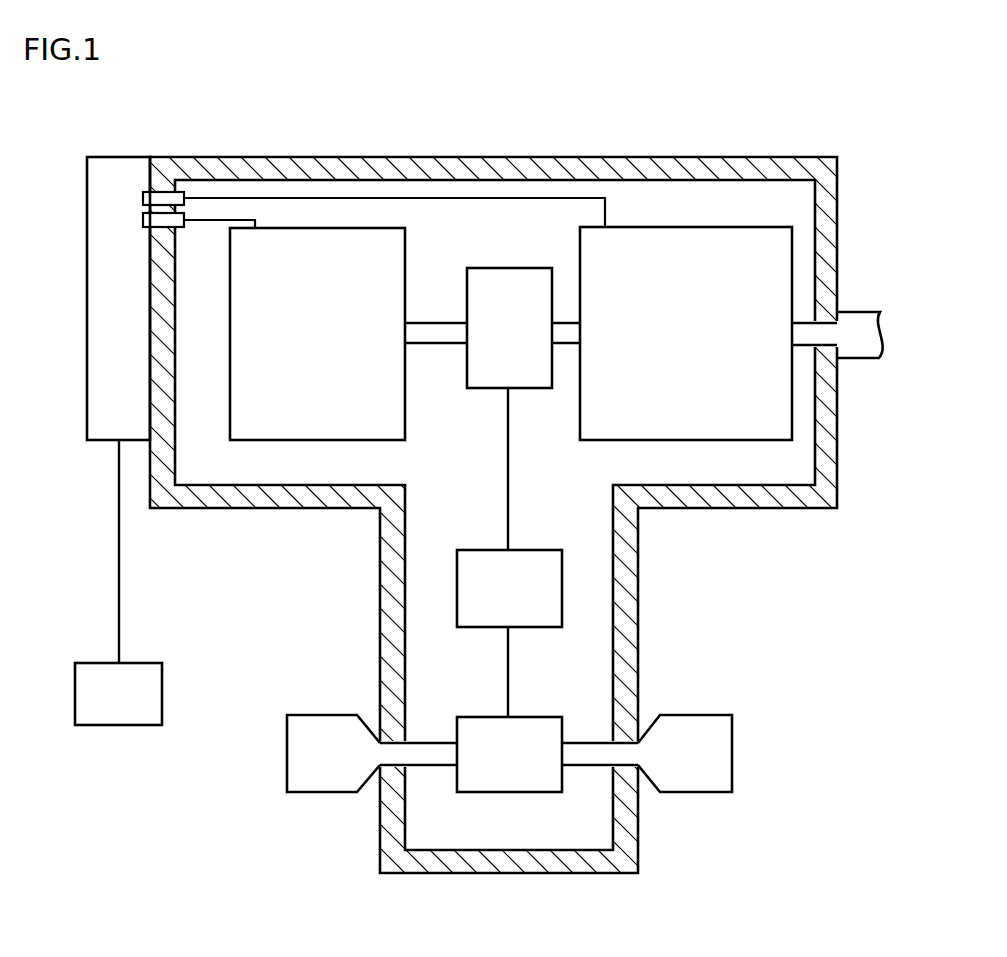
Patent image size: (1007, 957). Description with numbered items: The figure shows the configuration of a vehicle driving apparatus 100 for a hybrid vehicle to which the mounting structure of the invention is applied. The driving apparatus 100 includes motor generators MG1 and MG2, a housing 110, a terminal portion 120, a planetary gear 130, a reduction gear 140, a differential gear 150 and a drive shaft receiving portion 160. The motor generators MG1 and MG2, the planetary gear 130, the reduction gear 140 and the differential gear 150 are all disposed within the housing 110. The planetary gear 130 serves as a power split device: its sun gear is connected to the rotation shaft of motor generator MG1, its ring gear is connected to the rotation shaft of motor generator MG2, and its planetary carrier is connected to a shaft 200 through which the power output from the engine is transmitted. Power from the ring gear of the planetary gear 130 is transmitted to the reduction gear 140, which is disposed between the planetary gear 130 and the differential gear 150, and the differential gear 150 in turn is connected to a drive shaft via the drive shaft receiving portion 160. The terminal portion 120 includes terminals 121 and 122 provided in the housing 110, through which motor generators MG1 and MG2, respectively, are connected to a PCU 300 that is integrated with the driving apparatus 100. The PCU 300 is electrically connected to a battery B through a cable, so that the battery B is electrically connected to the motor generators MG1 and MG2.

The driving apparatus 100 is at (777, 132).
The housing 110 is at (510, 863).
The terminal portion 120 is at (351, 153).
The terminal 121 is at (163, 198).
The terminal 122 is at (143, 220).
The planetary gear 130 is at (488, 390).
The reduction gear 140 is at (562, 610).
The differential gear 150 is at (487, 793).
The drive shaft receiving portion 160 is at (697, 780).
The shaft 200 is at (862, 347).
The PCU (Power Control Unit) 300 is at (87, 178).
The battery B is at (120, 727).
The motor generator MG1 is at (683, 225).
The motor generator MG2 is at (328, 227).